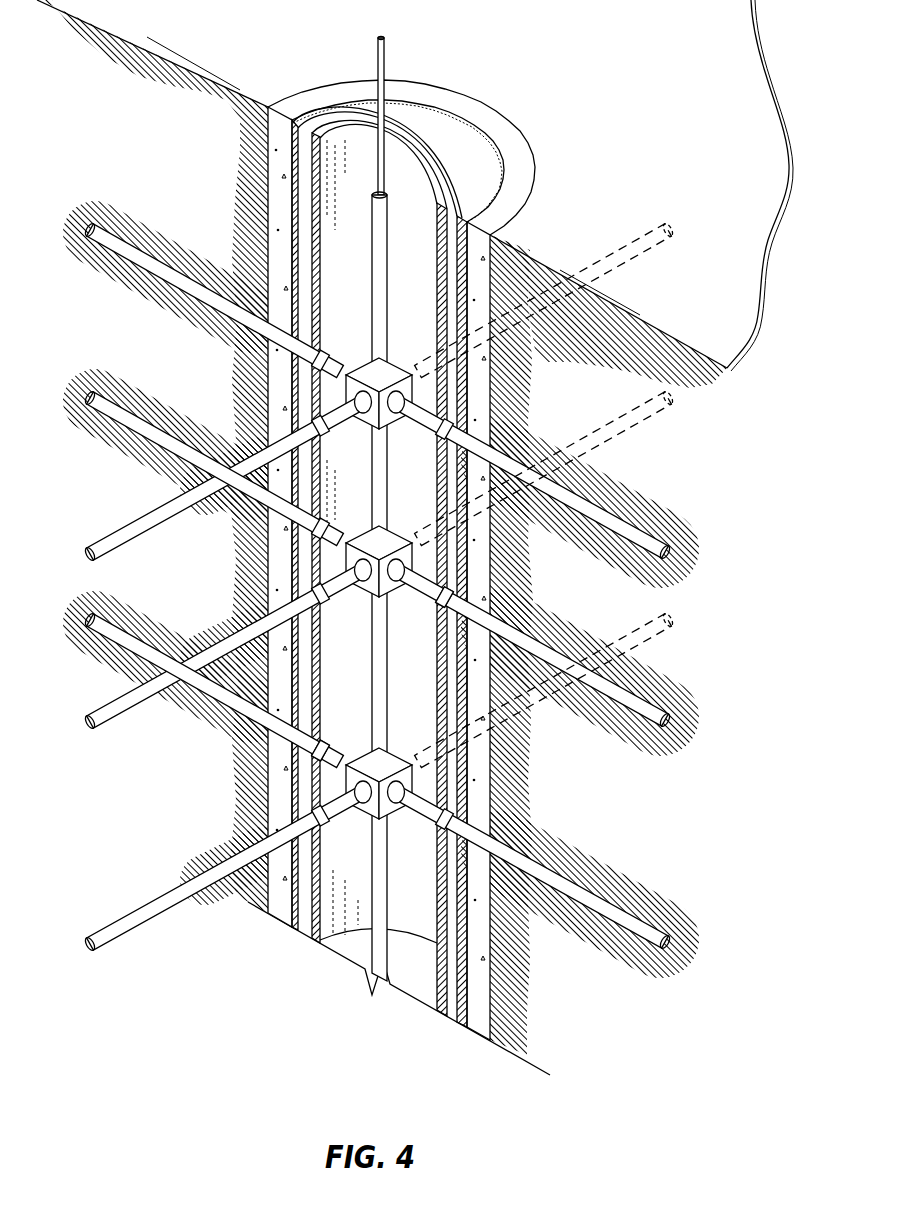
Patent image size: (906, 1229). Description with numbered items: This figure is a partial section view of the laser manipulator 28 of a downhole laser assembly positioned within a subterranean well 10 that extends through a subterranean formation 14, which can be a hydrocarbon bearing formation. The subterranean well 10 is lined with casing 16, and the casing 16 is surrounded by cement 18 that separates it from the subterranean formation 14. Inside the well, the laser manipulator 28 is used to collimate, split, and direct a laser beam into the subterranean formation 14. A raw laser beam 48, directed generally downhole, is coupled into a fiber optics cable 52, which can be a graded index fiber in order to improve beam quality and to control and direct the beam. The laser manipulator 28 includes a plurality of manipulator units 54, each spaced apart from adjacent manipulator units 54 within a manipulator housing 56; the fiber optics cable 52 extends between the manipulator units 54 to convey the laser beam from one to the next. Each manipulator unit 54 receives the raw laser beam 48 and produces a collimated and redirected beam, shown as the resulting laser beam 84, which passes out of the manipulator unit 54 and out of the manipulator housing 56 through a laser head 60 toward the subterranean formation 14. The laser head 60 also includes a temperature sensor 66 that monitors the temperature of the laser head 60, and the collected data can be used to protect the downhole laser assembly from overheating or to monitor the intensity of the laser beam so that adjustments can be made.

The subterranean well 10 is at (267, 635).
The subterranean formation 14 is at (83, 365).
The casing 16 is at (468, 988).
The cement 18 is at (272, 205).
The laser manipulator 28 is at (353, 957).
The raw laser beam 48 is at (386, 52).
The fiber optics cable 52 is at (385, 232).
The manipulator unit 54 is at (391, 832).
The manipulator housing 56 is at (436, 994).
The laser head 60 is at (331, 746).
The temperature sensor 66 is at (428, 600).
The resulting laser beam 84 is at (118, 414).